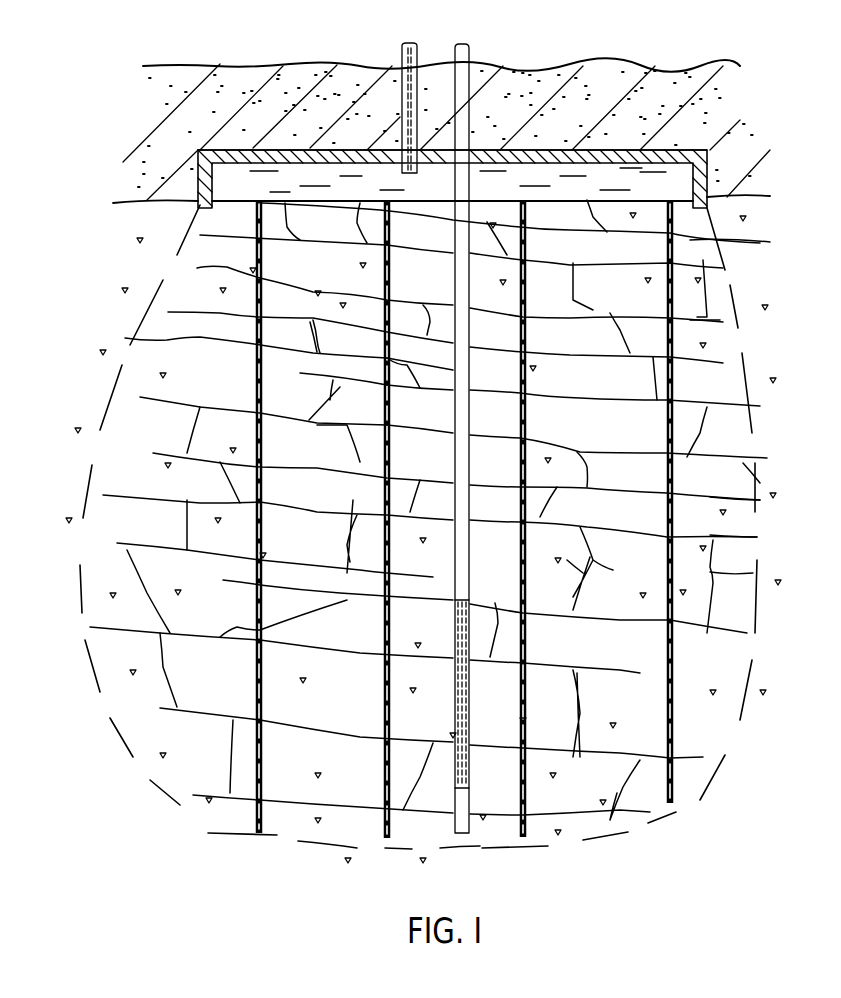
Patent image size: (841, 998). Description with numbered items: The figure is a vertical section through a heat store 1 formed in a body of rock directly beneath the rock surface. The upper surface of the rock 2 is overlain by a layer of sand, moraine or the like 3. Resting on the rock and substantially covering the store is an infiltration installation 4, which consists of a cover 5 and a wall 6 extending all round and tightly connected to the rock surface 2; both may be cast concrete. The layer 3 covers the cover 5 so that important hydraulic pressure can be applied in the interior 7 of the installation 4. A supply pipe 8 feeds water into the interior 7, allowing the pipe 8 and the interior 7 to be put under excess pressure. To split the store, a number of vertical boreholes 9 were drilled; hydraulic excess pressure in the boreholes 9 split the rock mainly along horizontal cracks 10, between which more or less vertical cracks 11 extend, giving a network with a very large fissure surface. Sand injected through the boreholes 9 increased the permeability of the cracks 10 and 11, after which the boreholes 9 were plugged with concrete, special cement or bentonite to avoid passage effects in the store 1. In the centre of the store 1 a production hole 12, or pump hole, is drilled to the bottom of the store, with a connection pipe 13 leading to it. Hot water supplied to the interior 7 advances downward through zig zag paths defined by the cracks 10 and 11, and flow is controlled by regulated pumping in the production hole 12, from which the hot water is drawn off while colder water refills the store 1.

The heat store 1 is at (743, 355).
The upper surface of the body of rock 2 is at (762, 197).
The layer of sand, moraine or the like 3 is at (729, 84).
The infiltration installation 4 is at (633, 152).
The cover 5 is at (608, 148).
The wall 6 is at (695, 187).
The interior of the infiltration installation 7 is at (328, 180).
The supply pipe 8 is at (402, 56).
The vertical boreholes 9 is at (673, 397).
The horizontal cracks 10 is at (740, 503).
The vertical cracks 11 is at (753, 578).
The production hole 12 is at (456, 822).
The connection pipe 13 is at (469, 50).